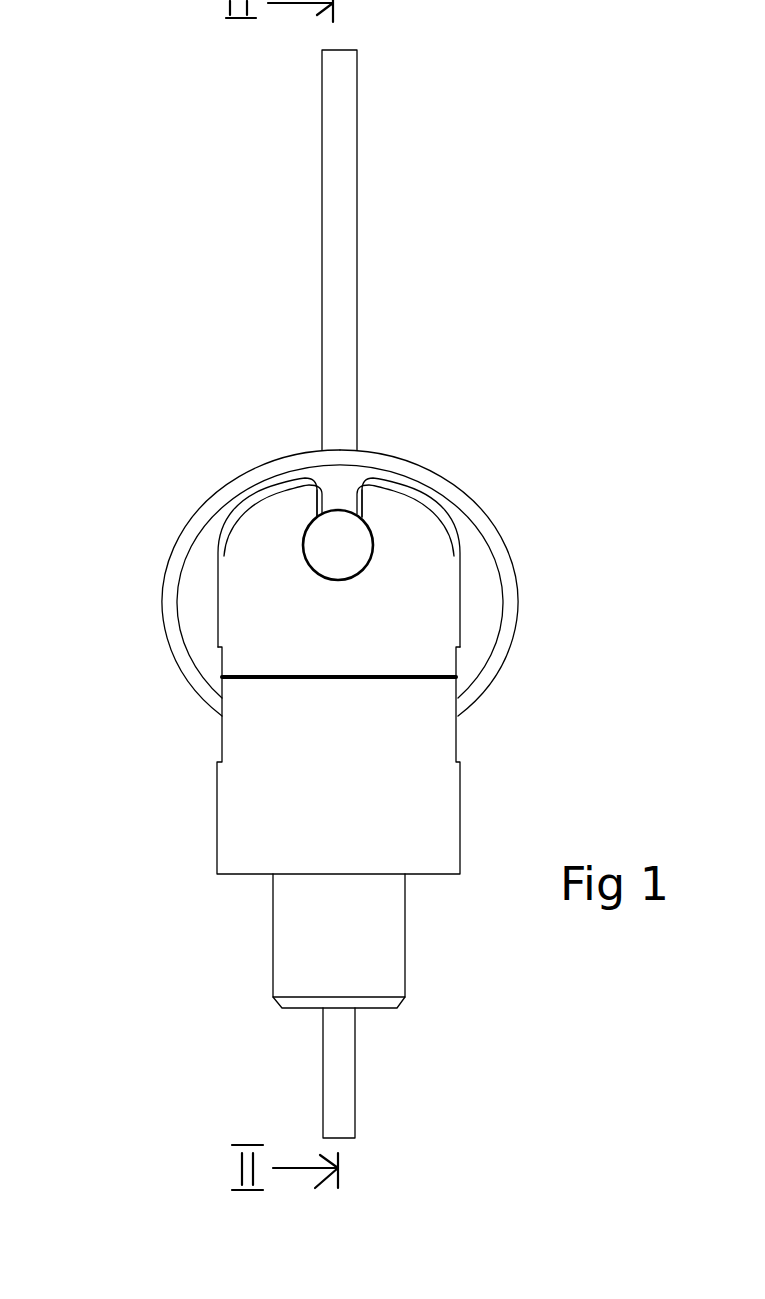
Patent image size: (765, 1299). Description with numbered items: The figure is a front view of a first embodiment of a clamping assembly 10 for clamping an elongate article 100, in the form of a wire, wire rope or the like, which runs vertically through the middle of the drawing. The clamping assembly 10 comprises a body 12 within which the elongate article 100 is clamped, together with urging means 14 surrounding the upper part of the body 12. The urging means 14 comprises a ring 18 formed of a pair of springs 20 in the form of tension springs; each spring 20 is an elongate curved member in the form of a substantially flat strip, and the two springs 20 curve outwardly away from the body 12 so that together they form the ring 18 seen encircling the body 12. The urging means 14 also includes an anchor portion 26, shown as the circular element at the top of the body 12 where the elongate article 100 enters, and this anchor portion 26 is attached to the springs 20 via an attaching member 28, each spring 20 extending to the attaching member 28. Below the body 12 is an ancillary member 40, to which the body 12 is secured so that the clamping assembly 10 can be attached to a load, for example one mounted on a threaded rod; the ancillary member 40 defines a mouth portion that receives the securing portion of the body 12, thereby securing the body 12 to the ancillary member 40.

The clamping assembly 10 is at (193, 452).
The body 12 is at (438, 548).
The urging means 14 is at (527, 637).
The ring 18 is at (153, 653).
The springs 20 is at (167, 532).
The anchor portion 26 is at (340, 545).
The attaching member 28 is at (330, 495).
The ancillary member 40 is at (197, 833).
The elongate article 100 is at (357, 238).